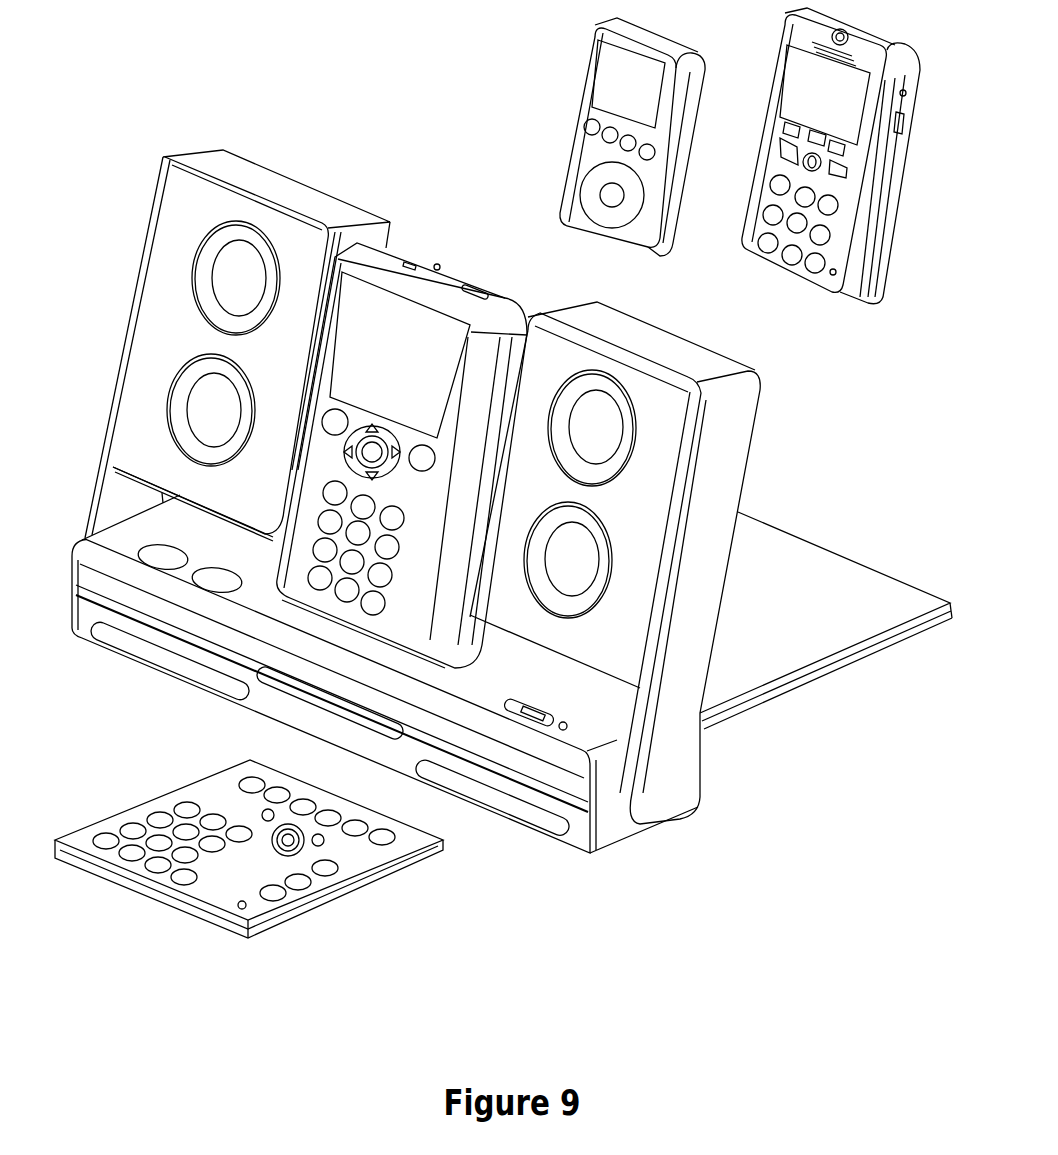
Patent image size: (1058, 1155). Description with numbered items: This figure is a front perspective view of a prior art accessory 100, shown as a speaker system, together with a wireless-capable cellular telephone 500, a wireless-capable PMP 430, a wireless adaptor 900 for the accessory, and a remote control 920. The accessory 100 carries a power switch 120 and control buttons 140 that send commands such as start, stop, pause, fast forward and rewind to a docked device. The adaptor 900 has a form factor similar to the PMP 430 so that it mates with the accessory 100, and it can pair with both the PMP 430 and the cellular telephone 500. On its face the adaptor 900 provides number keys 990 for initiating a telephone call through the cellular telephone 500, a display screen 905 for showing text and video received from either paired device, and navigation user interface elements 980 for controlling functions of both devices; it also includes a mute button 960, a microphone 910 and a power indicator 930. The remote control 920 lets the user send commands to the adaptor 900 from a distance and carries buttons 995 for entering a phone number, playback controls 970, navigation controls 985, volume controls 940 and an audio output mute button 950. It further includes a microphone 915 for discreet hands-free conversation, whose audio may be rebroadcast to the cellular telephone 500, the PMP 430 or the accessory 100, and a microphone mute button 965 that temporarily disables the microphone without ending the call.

The accessory 100 is at (657, 803).
The power switch 120 is at (530, 700).
The control buttons 140 is at (183, 551).
The PMP 430 is at (587, 82).
The cellular telephone 500 is at (745, 182).
The adaptor 900 is at (398, 628).
The display screen 905 is at (352, 350).
The microphone 910 is at (436, 262).
The microphone 915 is at (232, 910).
The remote control 920 is at (190, 917).
The power indicator 930 is at (410, 260).
The volume controls 940 is at (338, 876).
The audio output mute button 950 is at (312, 888).
The mute button 960 is at (478, 278).
The microphone mute button 965 is at (170, 883).
The playback controls 970 is at (260, 781).
The navigation user interface elements 980 is at (320, 426).
The navigation controls 985 is at (260, 810).
The number keys 990 is at (402, 551).
The buttons 995 is at (137, 820).